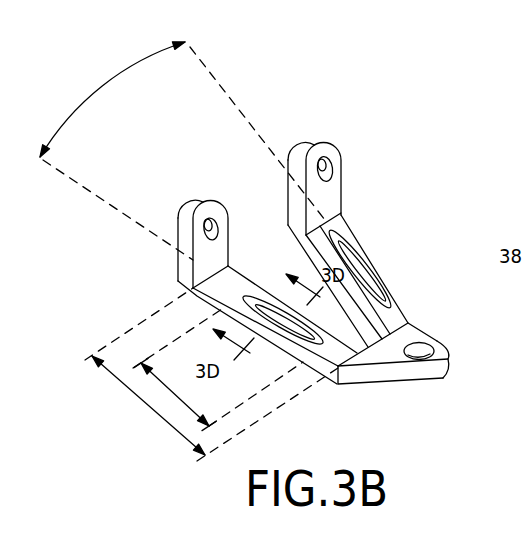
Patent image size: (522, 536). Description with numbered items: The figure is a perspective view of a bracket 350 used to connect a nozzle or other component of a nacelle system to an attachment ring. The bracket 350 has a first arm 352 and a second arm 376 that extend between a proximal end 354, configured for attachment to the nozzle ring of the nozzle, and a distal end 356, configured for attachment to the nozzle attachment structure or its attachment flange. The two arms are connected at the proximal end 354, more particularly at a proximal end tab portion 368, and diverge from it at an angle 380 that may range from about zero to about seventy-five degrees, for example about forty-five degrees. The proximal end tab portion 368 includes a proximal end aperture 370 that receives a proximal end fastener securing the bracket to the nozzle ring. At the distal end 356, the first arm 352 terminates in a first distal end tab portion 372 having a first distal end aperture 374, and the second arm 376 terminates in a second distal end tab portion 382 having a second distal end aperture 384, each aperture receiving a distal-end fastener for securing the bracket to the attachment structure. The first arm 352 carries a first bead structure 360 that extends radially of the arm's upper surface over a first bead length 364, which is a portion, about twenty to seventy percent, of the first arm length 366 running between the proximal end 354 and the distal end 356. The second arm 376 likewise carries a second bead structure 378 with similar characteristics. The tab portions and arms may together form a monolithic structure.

The bracket 350 is at (208, 145).
The first arm 352 is at (213, 314).
The proximal end 354 is at (381, 378).
The distal end 356 is at (176, 256).
The first bead structure 360 is at (276, 306).
The first bead length 364 is at (175, 393).
The first arm length 366 is at (157, 409).
The proximal end tab portion 368 is at (449, 376).
The proximal end aperture 370 is at (430, 346).
The first distal end tab portion 372 is at (178, 233).
The first distal end aperture 374 is at (206, 215).
The second arm 376 is at (342, 218).
The second bead structure 378 is at (368, 257).
The angle 380 is at (114, 78).
The second distal end tab portion 382 is at (291, 165).
The second distal end aperture 384 is at (331, 167).